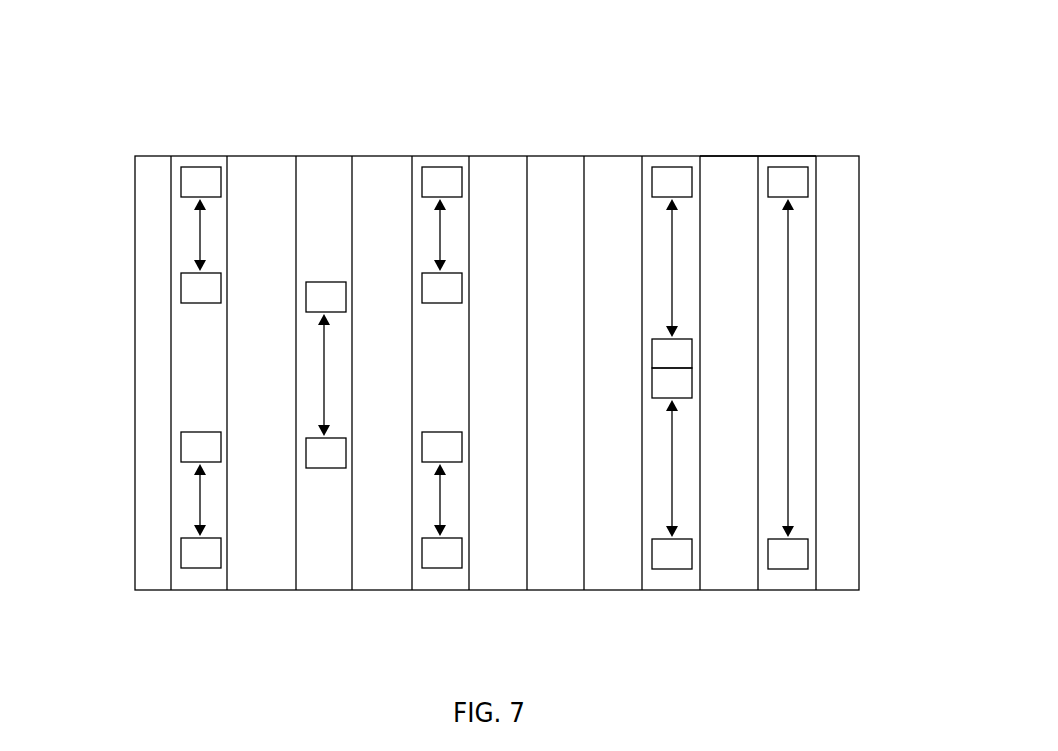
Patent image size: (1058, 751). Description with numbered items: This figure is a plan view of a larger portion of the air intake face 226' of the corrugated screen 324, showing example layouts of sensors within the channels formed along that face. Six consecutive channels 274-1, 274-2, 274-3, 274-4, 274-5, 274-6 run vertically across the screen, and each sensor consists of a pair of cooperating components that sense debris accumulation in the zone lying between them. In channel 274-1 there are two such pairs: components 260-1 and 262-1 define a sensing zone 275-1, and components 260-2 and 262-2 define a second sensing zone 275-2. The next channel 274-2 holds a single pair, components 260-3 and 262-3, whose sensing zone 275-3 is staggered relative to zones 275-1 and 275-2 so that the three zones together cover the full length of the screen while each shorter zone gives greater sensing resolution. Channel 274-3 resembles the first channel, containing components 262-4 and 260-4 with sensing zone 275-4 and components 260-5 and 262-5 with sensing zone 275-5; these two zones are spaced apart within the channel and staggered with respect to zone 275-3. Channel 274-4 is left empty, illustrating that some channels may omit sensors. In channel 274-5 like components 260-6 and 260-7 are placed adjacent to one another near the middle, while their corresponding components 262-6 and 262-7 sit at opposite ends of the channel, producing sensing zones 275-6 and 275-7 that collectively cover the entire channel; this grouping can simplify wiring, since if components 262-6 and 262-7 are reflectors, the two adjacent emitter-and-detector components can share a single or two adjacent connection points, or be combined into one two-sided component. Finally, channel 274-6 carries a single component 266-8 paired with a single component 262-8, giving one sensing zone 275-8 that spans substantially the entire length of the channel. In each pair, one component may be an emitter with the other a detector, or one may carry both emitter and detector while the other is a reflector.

The screen 324 is at (155, 156).
The face 226' is at (787, 104).
The channel 274-1 is at (228, 165).
The channel 274-2 is at (353, 165).
The channel 274-3 is at (468, 165).
The channel 274-4 is at (583, 165).
The channel 274-5 is at (645, 165).
The channel 274-6 is at (813, 165).
The sensor component 260-1 is at (181, 185).
The sensor component 260-2 is at (181, 448).
The sensor component 260-3 is at (346, 298).
The sensor component 260-4 is at (462, 297).
The sensor component 260-5 is at (462, 448).
The sensor component 260-6 is at (692, 353).
The sensor component 260-7 is at (692, 382).
The sensor component 262-1 is at (181, 295).
The sensor component 262-2 is at (181, 555).
The sensor component 262-3 is at (346, 448).
The sensor component 262-4 is at (462, 182).
The sensor component 262-5 is at (440, 568).
The sensor component 262-6 is at (692, 182).
The sensor component 262-7 is at (680, 569).
The sensor component 262-8 is at (808, 549).
The light source 266-8 is at (808, 187).
The sensing zone 275-1 is at (200, 238).
The sensing zone 275-2 is at (200, 500).
The sensing zone 275-3 is at (324, 365).
The sensing zone 275-4 is at (440, 236).
The sensing zone 275-5 is at (440, 507).
The sensing zone 275-6 is at (672, 235).
The sensing zone 275-7 is at (672, 473).
The eighth travel path 275-8 is at (788, 343).